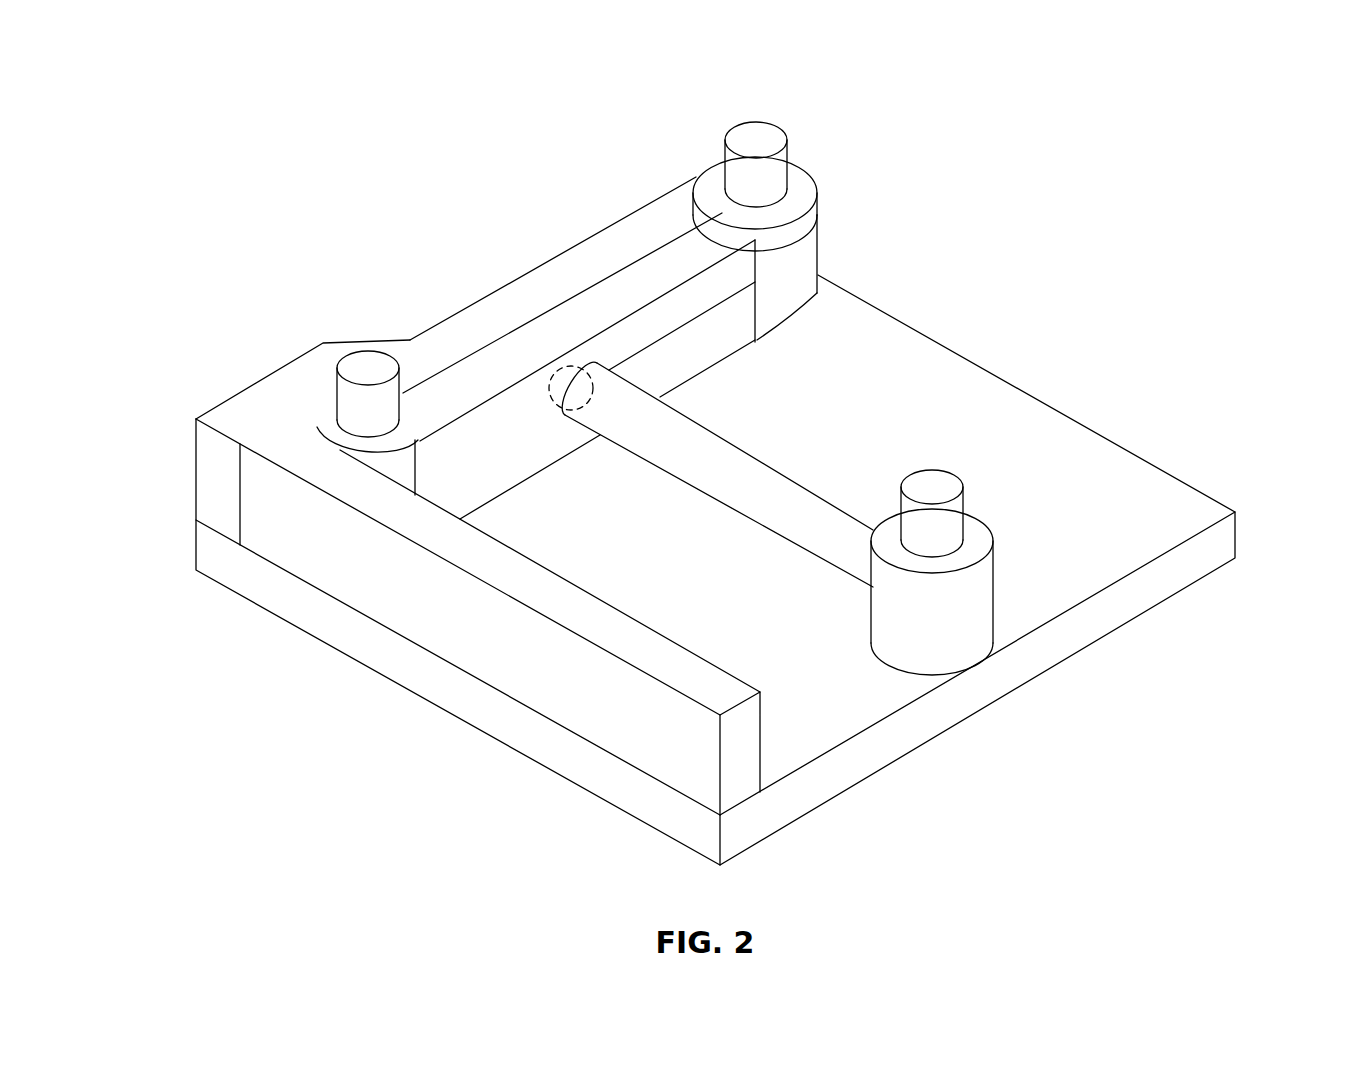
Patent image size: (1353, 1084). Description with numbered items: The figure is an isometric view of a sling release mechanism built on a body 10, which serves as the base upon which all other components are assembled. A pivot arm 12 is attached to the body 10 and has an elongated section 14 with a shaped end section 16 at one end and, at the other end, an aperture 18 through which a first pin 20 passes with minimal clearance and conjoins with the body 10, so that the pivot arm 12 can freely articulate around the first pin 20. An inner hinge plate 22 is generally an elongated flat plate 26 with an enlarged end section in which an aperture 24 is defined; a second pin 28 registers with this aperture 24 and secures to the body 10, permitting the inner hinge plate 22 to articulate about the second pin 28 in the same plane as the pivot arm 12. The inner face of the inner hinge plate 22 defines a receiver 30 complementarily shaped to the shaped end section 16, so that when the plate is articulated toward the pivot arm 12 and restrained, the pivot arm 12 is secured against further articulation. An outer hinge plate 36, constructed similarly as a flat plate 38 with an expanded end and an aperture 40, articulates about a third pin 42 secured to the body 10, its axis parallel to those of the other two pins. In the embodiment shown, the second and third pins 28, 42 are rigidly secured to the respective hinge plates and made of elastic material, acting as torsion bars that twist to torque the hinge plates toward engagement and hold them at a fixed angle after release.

The body 10 is at (847, 387).
The pivot arm 12 is at (1018, 610).
The elongated section 14 is at (750, 472).
The shaped end section 16 is at (775, 263).
The aperture 18 is at (993, 503).
The first pin 20 is at (933, 517).
The inner hinge plate 22 is at (522, 318).
The aperture 24 is at (312, 405).
The flat plate 26 is at (663, 268).
The second pin 28 is at (357, 400).
The receiver 30 is at (520, 364).
The outer hinge plate 36 is at (540, 252).
The flat plate 38 is at (597, 237).
The aperture 40 is at (700, 162).
The third pin 42 is at (762, 172).